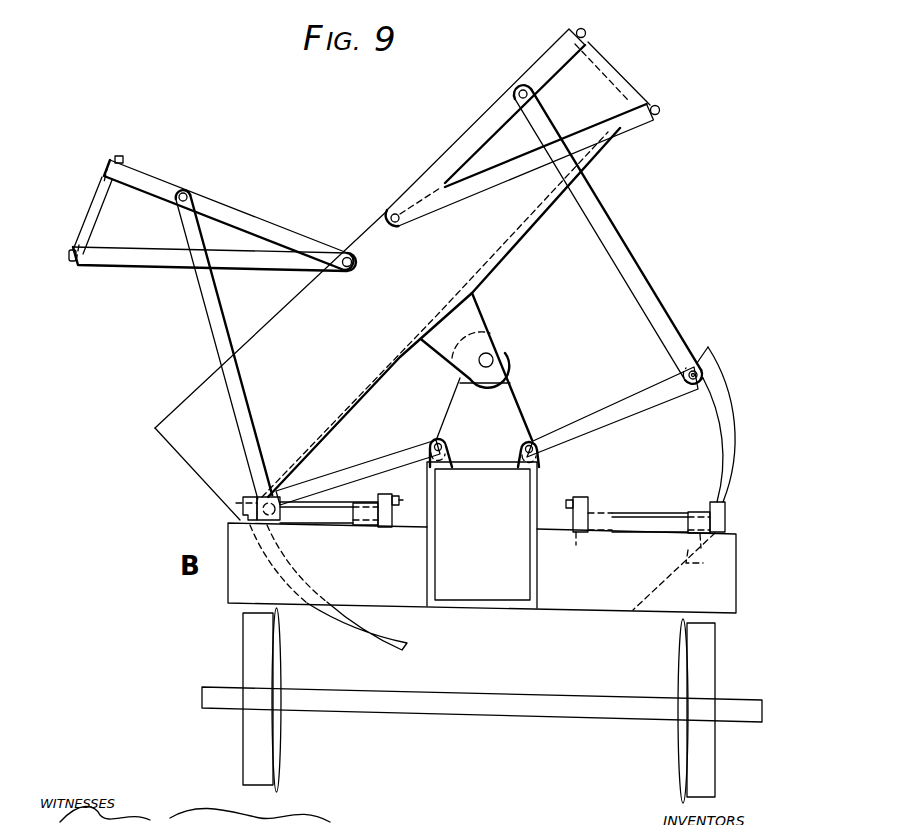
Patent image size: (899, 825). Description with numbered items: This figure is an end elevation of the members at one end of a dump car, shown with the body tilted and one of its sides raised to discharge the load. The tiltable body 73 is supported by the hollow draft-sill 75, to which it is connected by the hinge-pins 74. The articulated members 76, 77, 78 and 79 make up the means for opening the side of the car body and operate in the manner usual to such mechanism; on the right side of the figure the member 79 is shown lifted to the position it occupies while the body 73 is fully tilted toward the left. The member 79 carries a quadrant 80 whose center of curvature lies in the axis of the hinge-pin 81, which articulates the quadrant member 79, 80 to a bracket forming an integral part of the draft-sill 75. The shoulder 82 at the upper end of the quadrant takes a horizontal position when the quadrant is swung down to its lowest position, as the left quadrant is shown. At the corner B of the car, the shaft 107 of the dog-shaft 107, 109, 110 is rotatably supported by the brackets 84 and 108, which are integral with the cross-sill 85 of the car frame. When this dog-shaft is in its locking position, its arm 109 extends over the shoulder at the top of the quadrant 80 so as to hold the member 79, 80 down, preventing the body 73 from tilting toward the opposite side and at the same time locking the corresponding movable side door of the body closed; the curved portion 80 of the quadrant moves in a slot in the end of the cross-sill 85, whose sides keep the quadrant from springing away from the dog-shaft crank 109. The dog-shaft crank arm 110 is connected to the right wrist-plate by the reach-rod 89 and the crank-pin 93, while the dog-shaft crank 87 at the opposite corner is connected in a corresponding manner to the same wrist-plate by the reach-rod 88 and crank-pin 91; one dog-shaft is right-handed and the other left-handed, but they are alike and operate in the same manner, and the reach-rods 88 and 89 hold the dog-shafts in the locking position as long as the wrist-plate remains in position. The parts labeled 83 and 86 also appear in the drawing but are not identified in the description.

The tiltable body 73 is at (387, 324).
The hinge-pins 74 is at (493, 357).
The hollow draft-sill 75 is at (432, 497).
The articulated member 76 is at (233, 220).
The articulated member 77 is at (157, 257).
The articulated member 78 is at (210, 307).
The articulated member 79 is at (355, 482).
The quadrant 80 is at (726, 428).
The hinge-pin 81 is at (523, 443).
The shoulder 82 is at (703, 346).
The slide bar 83 is at (657, 522).
The bracket 84 is at (363, 525).
The cross-sill 85 is at (482, 568).
The end block 86 is at (730, 502).
The dog-shaft crank 87 is at (585, 503).
The reach-rod 88 is at (575, 530).
The reach-rod 89 is at (385, 517).
The crank-pin 91 is at (572, 502).
The crank-pin 93 is at (398, 496).
The shaft 107 is at (332, 515).
The bracket 108 is at (266, 496).
The arm 109 is at (244, 498).
The dog-shaft crank arm 110 is at (385, 493).